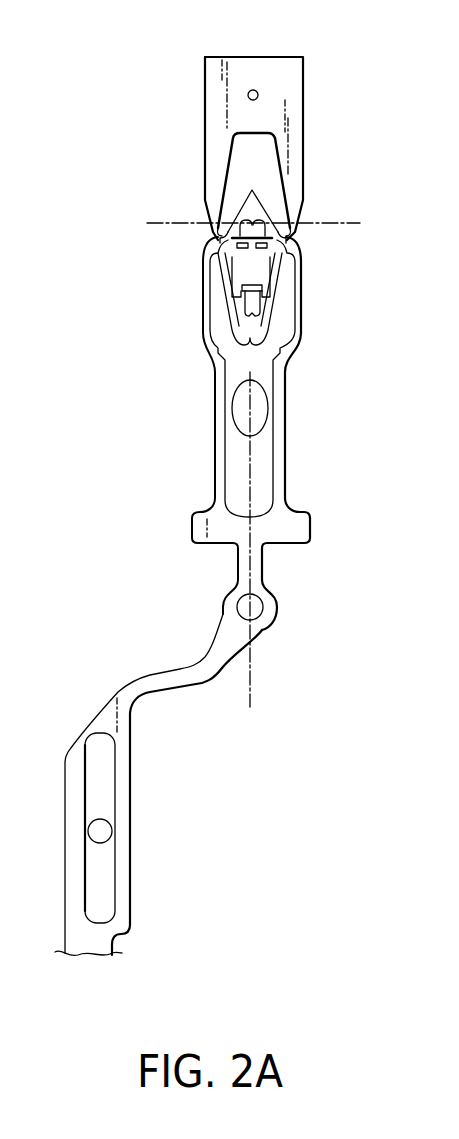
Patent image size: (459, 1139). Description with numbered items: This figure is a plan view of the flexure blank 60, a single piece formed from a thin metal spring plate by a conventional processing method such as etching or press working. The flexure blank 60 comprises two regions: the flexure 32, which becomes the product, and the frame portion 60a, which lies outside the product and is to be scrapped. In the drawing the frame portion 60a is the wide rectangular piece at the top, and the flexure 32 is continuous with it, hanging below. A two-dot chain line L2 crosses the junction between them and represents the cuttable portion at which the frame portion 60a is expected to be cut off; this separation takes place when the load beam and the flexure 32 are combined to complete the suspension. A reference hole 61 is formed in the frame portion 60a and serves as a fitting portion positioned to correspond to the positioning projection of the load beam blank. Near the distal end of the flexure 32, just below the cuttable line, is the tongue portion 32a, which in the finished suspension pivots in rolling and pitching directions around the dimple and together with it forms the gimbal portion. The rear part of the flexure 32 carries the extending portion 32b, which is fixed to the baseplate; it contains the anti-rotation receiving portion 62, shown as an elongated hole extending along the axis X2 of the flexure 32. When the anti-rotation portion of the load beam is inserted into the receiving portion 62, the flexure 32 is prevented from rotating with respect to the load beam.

The flexure 32 is at (267, 363).
The tongue portion 32a is at (263, 268).
The extending portion 32b is at (73, 778).
The flexure blank 60 is at (332, 159).
The frame portion 60a is at (218, 117).
The reference hole 61 is at (253, 89).
The anti-rotation receiving portion 62 is at (98, 842).
The two-dot chain line L2 is at (267, 224).
The axis of the flexure X2 is at (252, 675).